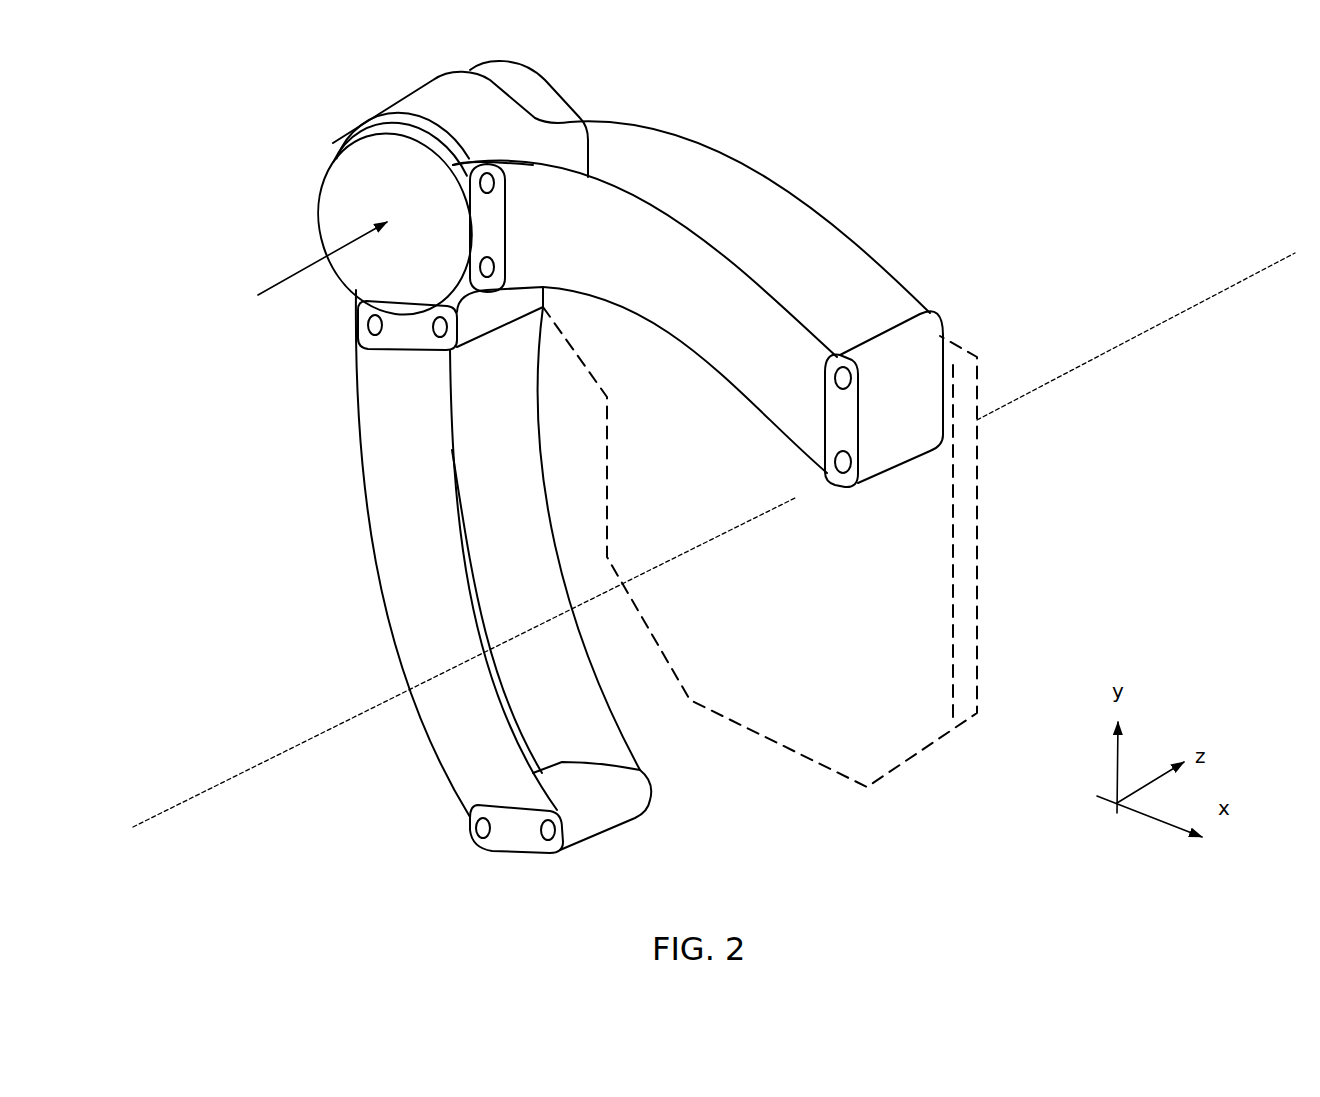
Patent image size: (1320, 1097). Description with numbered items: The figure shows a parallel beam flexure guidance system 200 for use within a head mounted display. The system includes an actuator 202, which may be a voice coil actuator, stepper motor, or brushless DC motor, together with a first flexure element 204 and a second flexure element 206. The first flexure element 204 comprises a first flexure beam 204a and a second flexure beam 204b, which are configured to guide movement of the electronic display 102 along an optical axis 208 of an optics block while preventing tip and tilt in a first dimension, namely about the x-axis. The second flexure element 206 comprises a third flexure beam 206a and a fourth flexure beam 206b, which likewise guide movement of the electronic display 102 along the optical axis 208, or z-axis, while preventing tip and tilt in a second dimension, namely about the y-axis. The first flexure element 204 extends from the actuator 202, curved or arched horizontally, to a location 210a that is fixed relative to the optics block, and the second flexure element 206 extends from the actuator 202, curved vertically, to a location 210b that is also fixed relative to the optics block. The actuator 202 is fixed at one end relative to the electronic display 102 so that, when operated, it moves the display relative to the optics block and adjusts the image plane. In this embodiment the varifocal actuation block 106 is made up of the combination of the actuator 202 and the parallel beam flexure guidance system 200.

The parallel beam flexure guidance system 200 is at (1283, 61).
The varifocal actuation block 106 is at (280, 127).
The electronic display 102 is at (917, 645).
The actuator 202 is at (440, 100).
The first flexure element 204 is at (764, 276).
The first flexure beam 204a is at (625, 157).
The second flexure beam 204b is at (637, 257).
The second flexure element 206 is at (501, 573).
The third flexure beam 206a is at (497, 573).
The fourth flexure beam 206b is at (380, 477).
The optical axis 208 is at (170, 808).
The location fixed relative to the optics block 210a is at (913, 370).
The location fixed relative to the optics block 210b is at (583, 805).